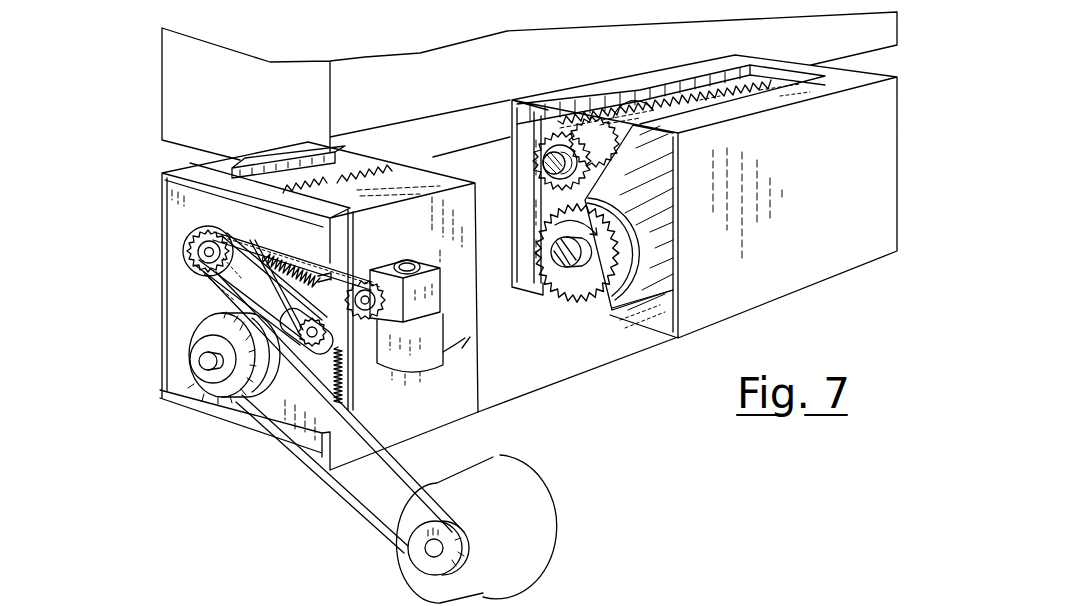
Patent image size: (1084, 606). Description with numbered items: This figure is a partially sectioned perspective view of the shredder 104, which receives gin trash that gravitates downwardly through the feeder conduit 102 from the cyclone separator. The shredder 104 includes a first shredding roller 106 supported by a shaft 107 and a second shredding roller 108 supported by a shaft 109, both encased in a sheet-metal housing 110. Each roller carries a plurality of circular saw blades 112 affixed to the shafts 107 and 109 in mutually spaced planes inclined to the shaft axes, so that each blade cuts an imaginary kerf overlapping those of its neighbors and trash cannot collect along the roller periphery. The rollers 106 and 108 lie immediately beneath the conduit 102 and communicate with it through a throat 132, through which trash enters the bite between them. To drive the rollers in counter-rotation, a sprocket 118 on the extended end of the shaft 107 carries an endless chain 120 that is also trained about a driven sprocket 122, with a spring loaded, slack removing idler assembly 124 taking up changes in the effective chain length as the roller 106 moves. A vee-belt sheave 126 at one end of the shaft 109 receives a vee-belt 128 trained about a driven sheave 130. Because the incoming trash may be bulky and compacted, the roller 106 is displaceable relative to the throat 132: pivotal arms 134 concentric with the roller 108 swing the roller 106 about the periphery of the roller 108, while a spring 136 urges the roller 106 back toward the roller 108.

The feeder conduit 102 is at (180, 60).
The shredder 104 is at (175, 250).
The first shredding roller 106 is at (555, 150).
The shaft 107 is at (212, 248).
The second shredding roller 108 is at (587, 270).
The shaft 109 is at (205, 362).
The housing 110 is at (787, 270).
The saw blades 112 is at (608, 127).
The sprocket 118 is at (202, 228).
The endless chain 120 is at (298, 245).
The sprocket 122 is at (360, 290).
The spring loaded, slack removing idler assembly 124 is at (318, 340).
The vee-belt sheave 126 is at (200, 332).
The vee-belt 128 is at (332, 490).
The sheave 130 is at (427, 562).
The throat 132 is at (655, 103).
The pivotal arms 134 is at (228, 296).
The spring 136 is at (290, 286).